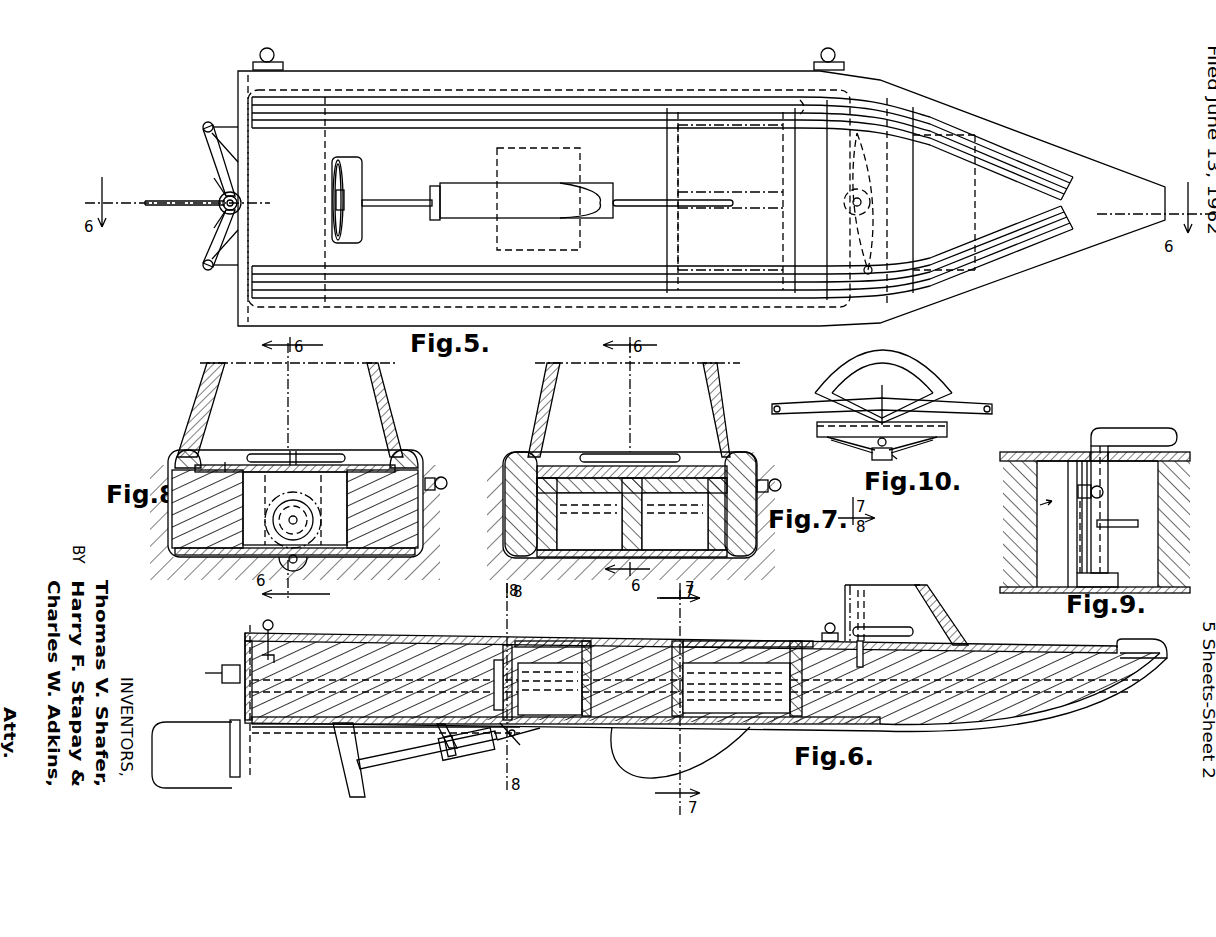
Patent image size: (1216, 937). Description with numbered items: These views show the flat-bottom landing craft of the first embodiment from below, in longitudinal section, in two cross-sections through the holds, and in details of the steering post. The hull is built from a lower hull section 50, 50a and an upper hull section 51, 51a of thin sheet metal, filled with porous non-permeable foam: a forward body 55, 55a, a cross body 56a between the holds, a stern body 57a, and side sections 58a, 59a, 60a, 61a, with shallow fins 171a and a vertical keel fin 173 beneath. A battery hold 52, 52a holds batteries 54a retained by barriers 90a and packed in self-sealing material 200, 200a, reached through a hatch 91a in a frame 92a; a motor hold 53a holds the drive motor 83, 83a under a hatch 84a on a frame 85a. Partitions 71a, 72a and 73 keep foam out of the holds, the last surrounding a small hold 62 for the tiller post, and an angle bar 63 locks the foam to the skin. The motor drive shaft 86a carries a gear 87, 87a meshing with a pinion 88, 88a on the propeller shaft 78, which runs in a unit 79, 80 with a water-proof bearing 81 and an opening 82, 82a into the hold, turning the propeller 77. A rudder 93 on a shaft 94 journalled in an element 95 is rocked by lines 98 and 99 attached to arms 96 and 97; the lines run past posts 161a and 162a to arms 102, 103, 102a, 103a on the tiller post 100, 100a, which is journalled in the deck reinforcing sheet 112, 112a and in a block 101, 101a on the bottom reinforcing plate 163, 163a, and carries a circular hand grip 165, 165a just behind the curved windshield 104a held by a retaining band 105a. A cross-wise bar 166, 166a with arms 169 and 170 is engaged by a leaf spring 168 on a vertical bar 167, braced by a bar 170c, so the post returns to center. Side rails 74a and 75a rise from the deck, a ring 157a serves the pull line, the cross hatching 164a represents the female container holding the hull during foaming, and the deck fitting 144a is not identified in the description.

In FIG. 9, the lower hull section 50 is at (1146, 598).
In FIG. 5, the lower hull section 50a is at (513, 65).
In FIG. 8, the lower hull section 50a is at (428, 552).
In FIG. 7, the lower hull section 50a is at (760, 555).
In FIG. 6, the lower hull section 50a is at (939, 749).
In FIG. 9, the upper hull section 51 is at (1033, 452).
In FIG. 8, the upper hull section 51a is at (166, 462).
In FIG. 7, the upper hull section 51a is at (504, 484).
In FIG. 6, the upper hull section 51a is at (1047, 637).
In FIG. 7, the battery hold 52 is at (605, 482).
In FIG. 5, the battery hold 52a is at (665, 236).
In FIG. 6, the battery hold 52a is at (752, 660).
In FIG. 5, the drive motor hold 53a is at (490, 240).
In FIG. 8, the drive motor hold 53a is at (330, 466).
In FIG. 6, the drive motor hold 53a is at (565, 647).
In FIG. 5, the storage batteries 54a is at (667, 178).
In FIG. 7, the storage batteries 54a is at (632, 521).
In FIG. 6, the storage batteries 54a is at (736, 691).
In FIG. 9, the forward porous material body 55 is at (1008, 565).
In FIG. 6, the forward porous material body 55a is at (993, 728).
In FIG. 6, the cross porous material body 56a is at (626, 641).
In FIG. 6, the stern porous material body 57a is at (390, 640).
In FIG. 7, the side porous section 58a is at (757, 521).
In FIG. 7, the side porous section 59a is at (503, 545).
In FIG. 8, the side porous section 60a is at (423, 513).
In FIG. 7, the side porous section 60a is at (452, 498).
In FIG. 8, the side porous section 61a is at (168, 540).
In FIG. 5, the tiller post hold 62 is at (822, 243).
In FIG. 9, the tiller post hold 62 is at (1010, 520).
In FIG. 6, the angle bar 63 is at (313, 734).
In FIG. 6, the enclosing partition 71a is at (472, 641).
In FIG. 6, the enclosing partition 72a is at (680, 752).
In FIG. 9, the enclosing partition 73 is at (1080, 523).
In FIG. 8, the side rail 74a is at (182, 455).
In FIG. 7, the side rail 74a is at (518, 455).
In FIG. 6, the side rail 74a is at (405, 633).
In FIG. 8, the side rail 75a is at (405, 455).
In FIG. 7, the side rail 75a is at (740, 456).
In FIG. 5, the propeller 77 is at (361, 178).
In FIG. 6, the propeller 77 is at (353, 781).
In FIG. 5, the propeller shaft 78 is at (403, 206).
In FIG. 8, the propeller shaft 78 is at (300, 566).
In FIG. 6, the propeller shaft 78 is at (400, 762).
In FIG. 5, the propeller unit 79 is at (432, 191).
In FIG. 6, the propeller unit 79 is at (455, 759).
In FIG. 5, the propeller unit 80 is at (481, 193).
In FIG. 6, the propeller unit 80 is at (478, 758).
In FIG. 6, the packed water-proof bearing 81 is at (445, 748).
In FIG. 8, the opening 82 is at (313, 574).
In FIG. 6, the opening 82a is at (529, 746).
In FIG. 8, the drive motor 83 is at (295, 508).
In FIG. 6, the drive motor 83a is at (550, 691).
In FIG. 8, the hatch 84a is at (240, 466).
In FIG. 6, the hatch 84a is at (576, 640).
In FIG. 8, the hatch frame 85a is at (224, 462).
In FIG. 6, the hatch frame 85a is at (602, 641).
In FIG. 8, the motor drive shaft 86a is at (323, 484).
In FIG. 6, the motor drive shaft 86a is at (499, 660).
In FIG. 8, the gear 87 is at (281, 510).
In FIG. 6, the gear 87a is at (512, 645).
In FIG. 8, the pinion 88 is at (294, 524).
In FIG. 6, the pinion 88a is at (514, 738).
In FIG. 7, the battery barriers 90a is at (560, 551).
In FIG. 6, the battery barriers 90a is at (690, 724).
In FIG. 7, the battery hatch 91a is at (662, 478).
In FIG. 6, the battery hatch 91a is at (735, 641).
In FIG. 6, the battery hatch frame 92a is at (805, 641).
In FIG. 5, the rudder 93 is at (191, 199).
In FIG. 6, the rudder 93 is at (201, 742).
In FIG. 5, the rudder shaft 94 is at (237, 200).
In FIG. 6, the rudder shaft 94 is at (243, 750).
In FIG. 5, the rudder journal element 95 is at (219, 214).
In FIG. 6, the rudder journal element 95 is at (228, 668).
In FIG. 5, the rudder arm 96 is at (215, 166).
In FIG. 5, the rudder arm 97 is at (212, 251).
In FIG. 6, the rudder arm 97 is at (208, 676).
In FIG. 5, the steering line 98 is at (232, 127).
In FIG. 5, the steering line 99 is at (221, 268).
In FIG. 10, the tiller post 100 is at (884, 395).
In FIG. 9, the tiller post 100 is at (1100, 549).
In FIG. 5, the tiller post 100a is at (855, 196).
In FIG. 6, the tiller post 100a is at (866, 640).
In FIG. 9, the block 101 is at (1116, 586).
In FIG. 5, the block 101a is at (855, 214).
In FIG. 6, the block 101a is at (880, 726).
In FIG. 10, the tiller arm 102 is at (982, 404).
In FIG. 9, the tiller arm 102 is at (1118, 522).
In FIG. 5, the tiller arm 102a is at (870, 130).
In FIG. 6, the tiller arm 102a is at (895, 633).
In FIG. 10, the tiller arm 103 is at (780, 404).
In FIG. 5, the tiller arm 103a is at (880, 266).
In FIG. 8, the curved windshield 104a is at (383, 410).
In FIG. 7, the curved windshield 104a is at (540, 401).
In FIG. 6, the curved windshield 104a is at (918, 583).
In FIG. 6, the retaining band 105a is at (966, 644).
In FIG. 9, the deck reinforcing sheet 112 is at (1066, 446).
In FIG. 5, the deck reinforcing sheet 112a is at (855, 100).
In FIG. 7, the deck reinforcing sheet 112a is at (707, 478).
In FIG. 6, the deck reinforcing sheet 112a is at (948, 643).
In FIG. 5, the mooring ball 144a is at (272, 52).
In FIG. 8, the mooring ball 144a is at (438, 477).
In FIG. 7, the mooring ball 144a is at (771, 482).
In FIG. 6, the ring 157a is at (265, 624).
In FIG. 5, the post 161a is at (803, 310).
In FIG. 7, the post 161a is at (503, 496).
In FIG. 6, the post 161a is at (800, 726).
In FIG. 5, the post 162a is at (803, 105).
In FIG. 7, the post 162a is at (757, 546).
In FIG. 9, the hull bottom reinforcing plate 163 is at (1043, 592).
In FIG. 5, the hull bottom reinforcing plate 163a is at (322, 259).
In FIG. 8, the hull bottom reinforcing plate 163a is at (205, 560).
In FIG. 7, the hull bottom reinforcing plate 163a is at (585, 562).
In FIG. 8, the female container 164a is at (168, 528).
In FIG. 7, the female container 164a is at (503, 532).
In FIG. 5, the circular hand grip 165 is at (912, 356).
In FIG. 10, the circular hand grip 165 is at (905, 366).
In FIG. 9, the circular hand grip 165 is at (1156, 432).
In FIG. 8, the circular hand grip 165a is at (310, 455).
In FIG. 7, the circular hand grip 165a is at (620, 455).
In FIG. 6, the circular hand grip 165a is at (908, 628).
In FIG. 10, the cross-wise bar 166 is at (948, 432).
In FIG. 9, the cross-wise bar 166 is at (1103, 492).
In FIG. 6, the cross-wise bar 166a is at (860, 622).
In FIG. 10, the vertical bar 167 is at (878, 462).
In FIG. 9, the vertical bar 167 is at (1076, 559).
In FIG. 10, the leaf spring 168 is at (862, 449).
In FIG. 9, the leaf spring 168 is at (1078, 493).
In FIG. 10, the cross bar arm 169 is at (931, 446).
In FIG. 10, the cross bar arm 170 is at (828, 440).
In FIG. 10, the reinforcing bar 170c is at (911, 461).
In FIG. 9, the reinforcing bar 170c is at (1054, 538).
In FIG. 5, the shallow fins 171a is at (333, 112).
In FIG. 8, the shallow fins 171a is at (170, 555).
In FIG. 7, the shallow fins 171a is at (545, 565).
In FIG. 5, the vertical keel fin 173 is at (688, 198).
In FIG. 6, the self-sealing material 200 is at (770, 641).
In FIG. 7, the self-sealing material 200a is at (686, 478).